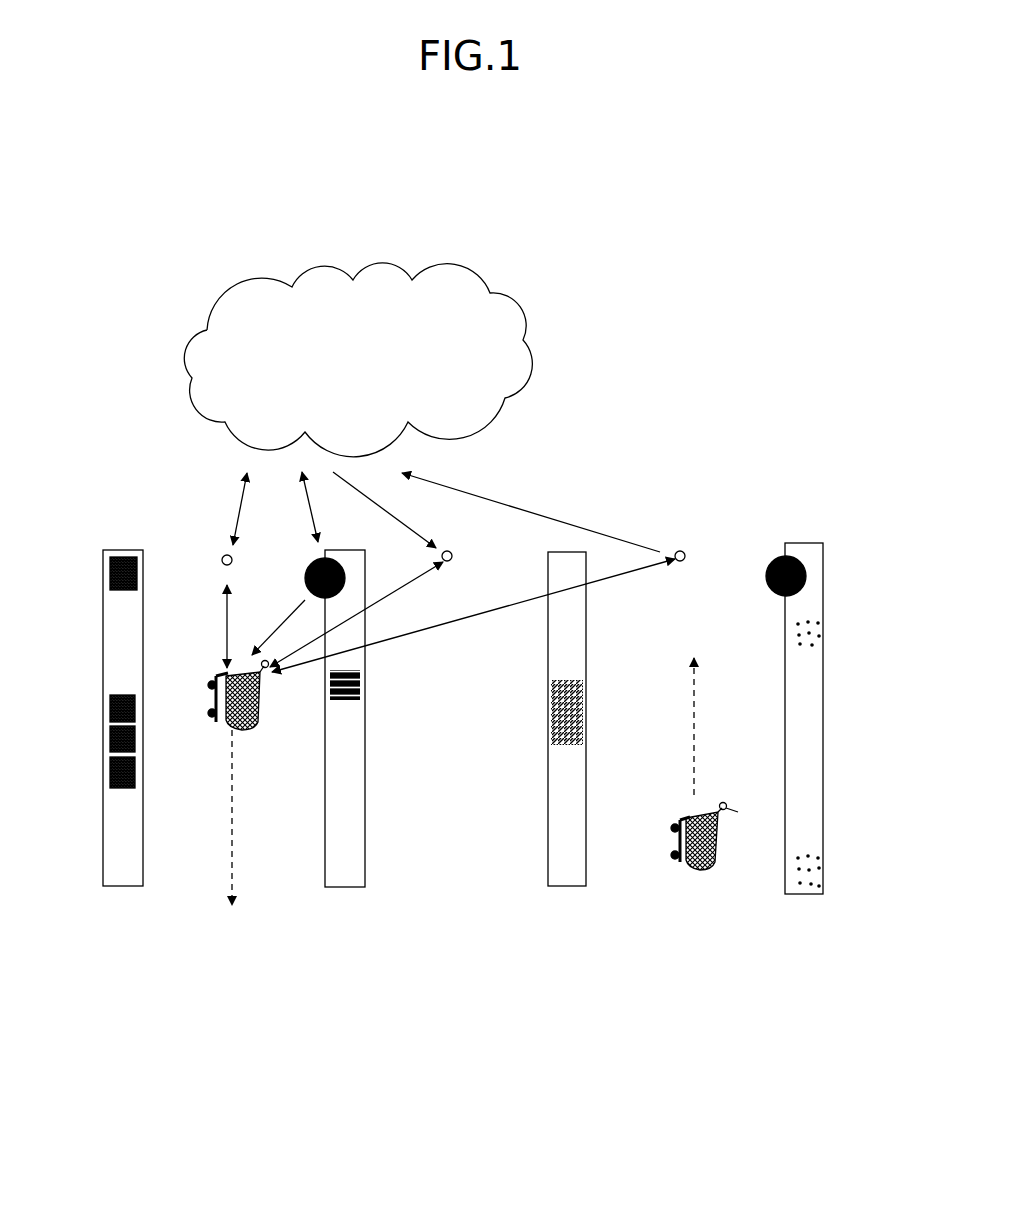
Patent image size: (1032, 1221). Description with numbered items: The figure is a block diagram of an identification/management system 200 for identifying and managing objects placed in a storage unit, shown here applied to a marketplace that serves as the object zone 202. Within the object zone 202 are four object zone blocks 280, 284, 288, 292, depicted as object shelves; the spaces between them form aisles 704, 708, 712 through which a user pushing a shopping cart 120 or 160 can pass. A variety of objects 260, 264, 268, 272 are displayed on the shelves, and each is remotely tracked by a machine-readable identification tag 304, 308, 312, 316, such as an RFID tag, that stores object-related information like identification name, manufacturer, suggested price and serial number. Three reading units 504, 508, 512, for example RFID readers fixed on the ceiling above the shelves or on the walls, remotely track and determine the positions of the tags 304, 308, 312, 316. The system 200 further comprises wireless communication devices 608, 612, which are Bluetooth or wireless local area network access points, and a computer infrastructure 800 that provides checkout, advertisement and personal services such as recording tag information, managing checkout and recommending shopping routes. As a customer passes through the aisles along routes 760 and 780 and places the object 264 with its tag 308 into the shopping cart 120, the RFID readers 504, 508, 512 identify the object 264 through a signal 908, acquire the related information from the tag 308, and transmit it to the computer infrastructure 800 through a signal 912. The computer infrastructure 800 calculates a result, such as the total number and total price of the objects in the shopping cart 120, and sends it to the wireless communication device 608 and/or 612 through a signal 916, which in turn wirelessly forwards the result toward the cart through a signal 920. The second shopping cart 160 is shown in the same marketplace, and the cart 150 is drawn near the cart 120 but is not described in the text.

The computer infrastructure 800 is at (358, 360).
The object zone 202 is at (749, 266).
The identification/management system 200 is at (810, 505).
The object zone block 280 is at (117, 888).
The object zone block 284 is at (333, 888).
The object zone block 288 is at (556, 888).
The object zone block 292 is at (790, 895).
The aisle 704 is at (157, 880).
The aisle 708 is at (541, 880).
The aisle 712 is at (600, 877).
The machine-readable identification tag 304 is at (103, 553).
The object 260 is at (130, 558).
The wireless communication device 608 is at (346, 578).
The wireless communication device 612 is at (805, 588).
The reading unit 504 is at (222, 567).
The reading unit 508 is at (455, 560).
The reading unit 512 is at (685, 548).
The signal 912 is at (237, 520).
The signal 916 is at (310, 490).
The signal 908 is at (223, 627).
The signal 920 is at (247, 656).
The shopping cart 150 is at (223, 698).
The shopping cart 120 is at (230, 723).
The machine-readable identification tag 308 is at (365, 693).
The object 264 is at (337, 702).
The object 268 is at (583, 683).
The machine-readable identification tag 312 is at (565, 677).
The machine-readable identification tag 316 is at (797, 637).
The object 272 is at (788, 625).
The route 760 is at (232, 860).
The route 780 is at (697, 703).
The shopping cart 160 is at (688, 872).